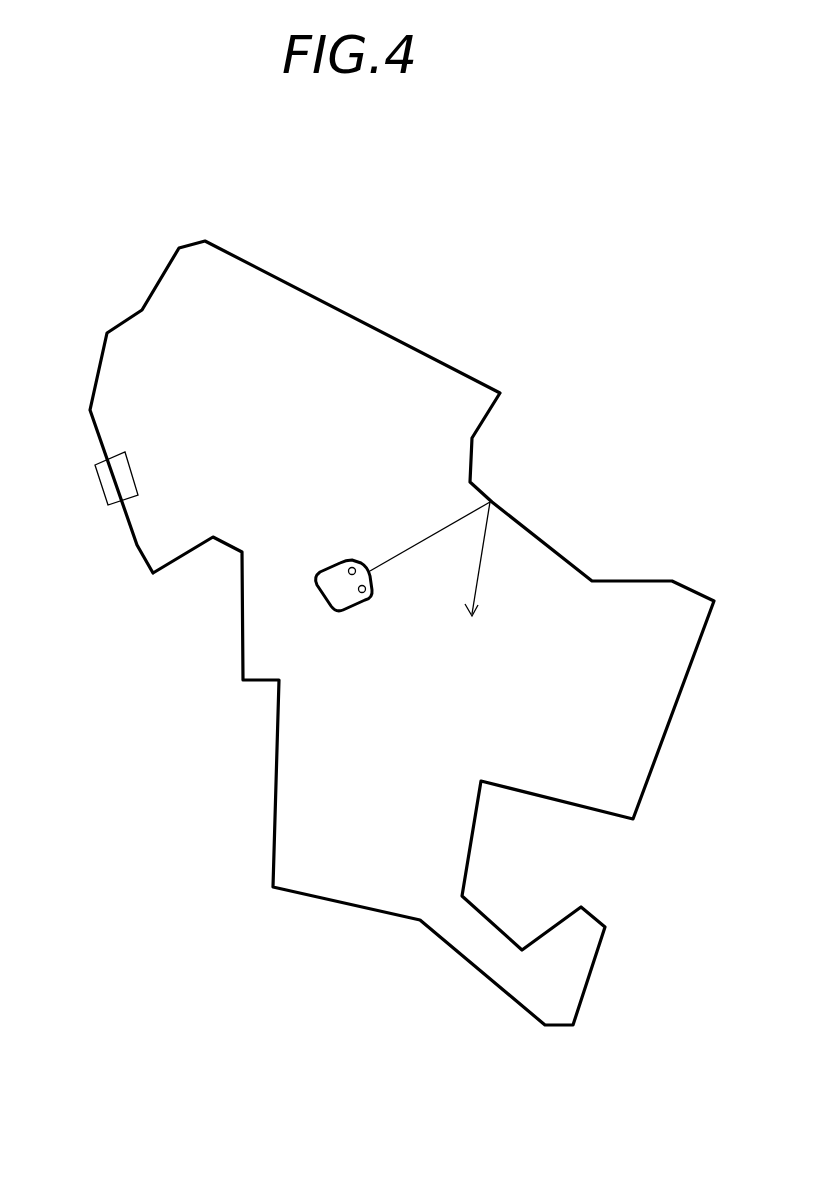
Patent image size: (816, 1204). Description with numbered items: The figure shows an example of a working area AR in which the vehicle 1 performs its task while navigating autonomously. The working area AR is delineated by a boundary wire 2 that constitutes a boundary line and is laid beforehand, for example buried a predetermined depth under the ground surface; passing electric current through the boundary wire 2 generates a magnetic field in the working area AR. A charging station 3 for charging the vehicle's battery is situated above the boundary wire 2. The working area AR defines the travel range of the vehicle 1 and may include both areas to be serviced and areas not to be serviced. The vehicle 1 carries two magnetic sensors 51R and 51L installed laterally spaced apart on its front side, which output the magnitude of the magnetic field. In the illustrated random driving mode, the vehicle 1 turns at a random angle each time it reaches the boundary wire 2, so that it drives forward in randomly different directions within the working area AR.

The vehicle 1 is at (347, 613).
The boundary wire 2 is at (275, 273).
The charging station 3 is at (95, 472).
The working area AR is at (390, 370).
The left magnetic sensor 51L is at (352, 567).
The right magnetic sensor 51R is at (365, 592).